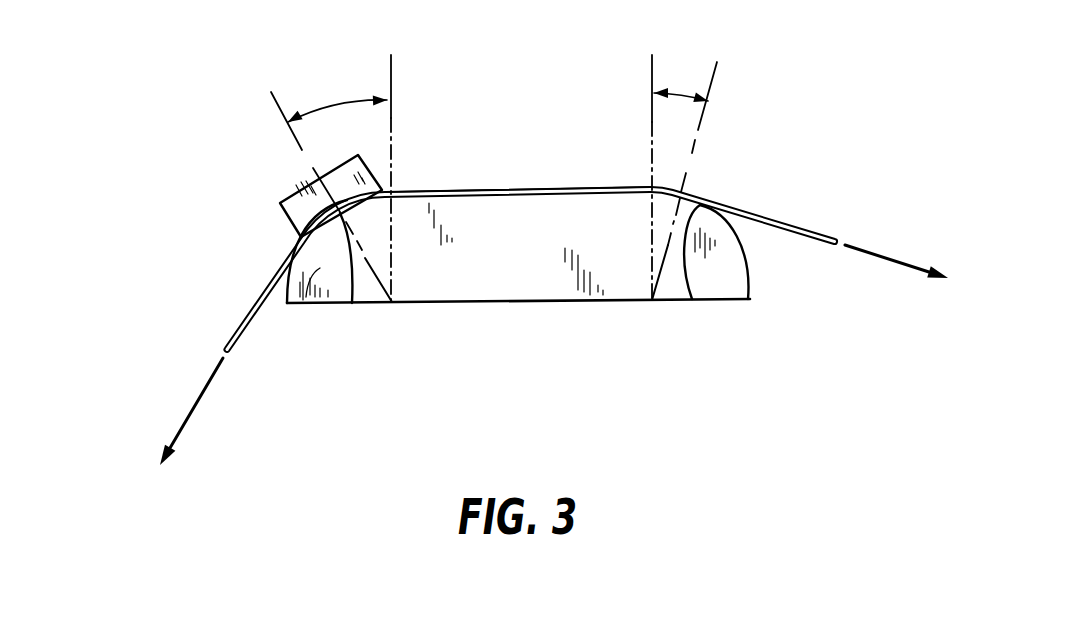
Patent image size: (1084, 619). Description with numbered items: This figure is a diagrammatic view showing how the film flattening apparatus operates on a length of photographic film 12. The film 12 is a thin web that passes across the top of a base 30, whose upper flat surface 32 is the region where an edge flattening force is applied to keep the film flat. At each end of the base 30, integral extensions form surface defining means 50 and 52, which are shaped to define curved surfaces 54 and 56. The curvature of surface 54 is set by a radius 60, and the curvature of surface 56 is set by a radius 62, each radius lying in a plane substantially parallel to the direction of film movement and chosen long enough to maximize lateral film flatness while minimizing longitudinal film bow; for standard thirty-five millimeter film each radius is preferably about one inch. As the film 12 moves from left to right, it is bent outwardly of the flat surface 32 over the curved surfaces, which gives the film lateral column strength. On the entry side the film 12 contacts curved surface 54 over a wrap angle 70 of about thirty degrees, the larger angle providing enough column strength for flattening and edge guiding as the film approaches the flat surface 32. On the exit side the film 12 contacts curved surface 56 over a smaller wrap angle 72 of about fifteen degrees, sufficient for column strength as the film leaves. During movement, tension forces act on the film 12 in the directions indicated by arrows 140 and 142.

The photographic film 12 is at (247, 290).
The base 30 is at (523, 302).
The flat surface 32 is at (515, 190).
The surface defining means 50 is at (325, 290).
The surface defining means 52 is at (747, 300).
The curved surface 54 is at (352, 303).
The curved surface 56 is at (692, 299).
The radius 60 is at (368, 262).
The radius 62 is at (675, 222).
The wrap angle 70 is at (335, 107).
The wrap angle 72 is at (685, 95).
The arrow 140 is at (195, 400).
The arrow 142 is at (885, 255).